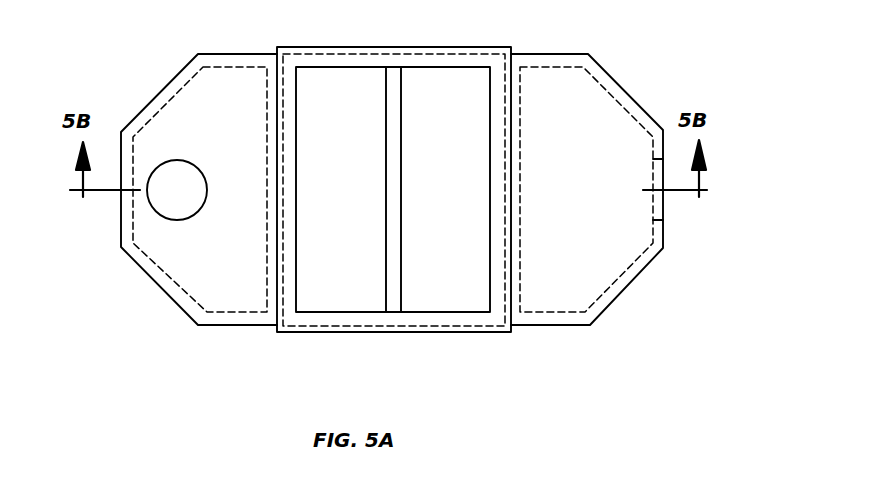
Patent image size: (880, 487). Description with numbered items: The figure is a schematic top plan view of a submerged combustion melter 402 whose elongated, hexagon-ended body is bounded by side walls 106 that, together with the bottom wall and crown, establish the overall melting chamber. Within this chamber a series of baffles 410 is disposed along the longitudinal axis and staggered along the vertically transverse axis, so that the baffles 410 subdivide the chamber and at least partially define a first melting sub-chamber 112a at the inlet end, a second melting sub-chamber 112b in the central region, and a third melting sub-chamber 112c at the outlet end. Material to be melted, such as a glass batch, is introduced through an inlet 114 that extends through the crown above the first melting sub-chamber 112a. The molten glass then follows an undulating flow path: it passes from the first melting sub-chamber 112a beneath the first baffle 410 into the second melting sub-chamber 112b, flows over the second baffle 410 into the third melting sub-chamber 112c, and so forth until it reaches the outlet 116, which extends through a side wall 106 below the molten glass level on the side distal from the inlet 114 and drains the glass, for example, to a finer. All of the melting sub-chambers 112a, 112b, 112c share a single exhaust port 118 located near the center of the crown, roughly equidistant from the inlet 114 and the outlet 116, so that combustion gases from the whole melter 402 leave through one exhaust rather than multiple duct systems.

The side wall 106 is at (572, 57).
The exhaust port 118 is at (452, 123).
The baffle 410 is at (265, 107).
The inlet 114 is at (157, 214).
The outlet 116 is at (663, 210).
The first melting sub-chamber 112a is at (213, 237).
The second melting sub-chamber 112b is at (338, 270).
The third melting sub-chamber 112c is at (562, 258).
The submerged combustion melter 402 is at (652, 326).